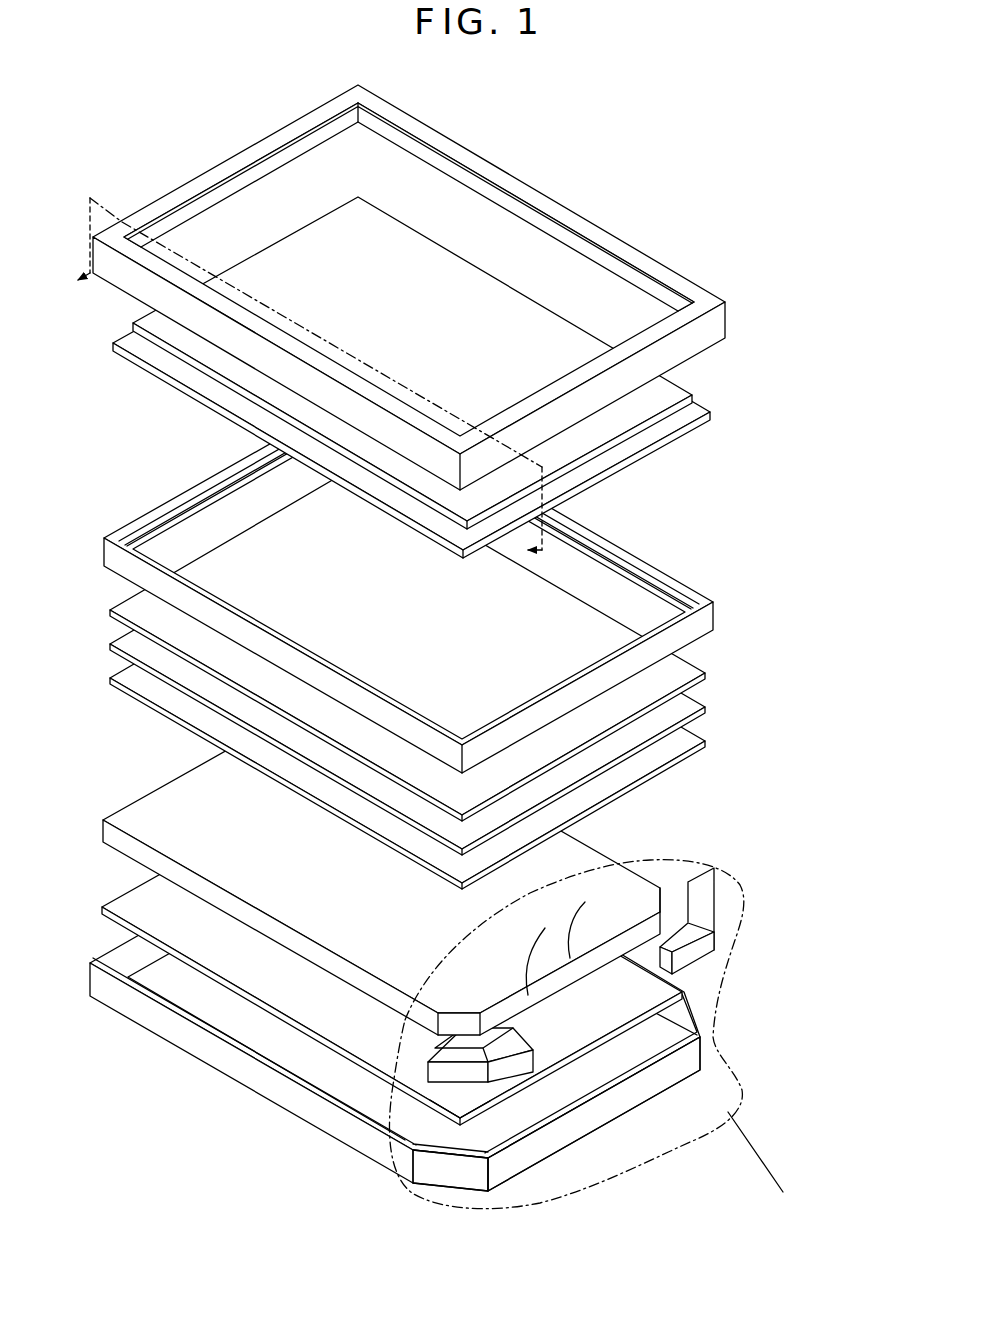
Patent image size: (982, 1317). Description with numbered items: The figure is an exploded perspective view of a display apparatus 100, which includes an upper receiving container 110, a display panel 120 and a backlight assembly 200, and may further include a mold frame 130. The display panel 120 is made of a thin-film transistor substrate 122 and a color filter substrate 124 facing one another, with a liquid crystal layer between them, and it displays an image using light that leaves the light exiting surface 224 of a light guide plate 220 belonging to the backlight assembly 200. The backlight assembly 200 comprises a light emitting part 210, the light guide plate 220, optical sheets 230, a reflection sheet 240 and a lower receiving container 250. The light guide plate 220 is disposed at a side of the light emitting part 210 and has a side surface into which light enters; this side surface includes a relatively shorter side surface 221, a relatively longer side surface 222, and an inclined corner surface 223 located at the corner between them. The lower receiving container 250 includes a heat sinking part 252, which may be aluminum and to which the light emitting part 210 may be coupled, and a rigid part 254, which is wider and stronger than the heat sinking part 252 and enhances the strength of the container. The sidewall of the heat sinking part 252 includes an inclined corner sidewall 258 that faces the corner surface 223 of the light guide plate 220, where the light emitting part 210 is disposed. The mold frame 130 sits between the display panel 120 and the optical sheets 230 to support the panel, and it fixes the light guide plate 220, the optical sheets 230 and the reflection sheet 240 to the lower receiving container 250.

The display apparatus 100 is at (705, 117).
The upper receiving container 110 is at (727, 318).
The display panel 120 is at (745, 430).
The thin-film transistor substrate 122 is at (630, 442).
The color filter substrate 124 is at (633, 405).
The mold frame 130 is at (726, 590).
The backlight assembly 200 is at (808, 660).
The light emitting part 210 is at (706, 869).
The light guide plate 220 is at (633, 862).
The relatively shorter side surface 221 is at (528, 995).
The relatively longer side surface 222 is at (317, 973).
The corner surface 223 is at (447, 1107).
The light exiting surface 224 is at (570, 958).
The optical sheets 230 is at (716, 673).
The reflection sheet 240 is at (432, 1080).
The lower receiving container 250 is at (688, 990).
The heat sinking part 252 is at (492, 1150).
The rigid part 254 is at (188, 994).
The corner sidewall 258 is at (460, 1187).